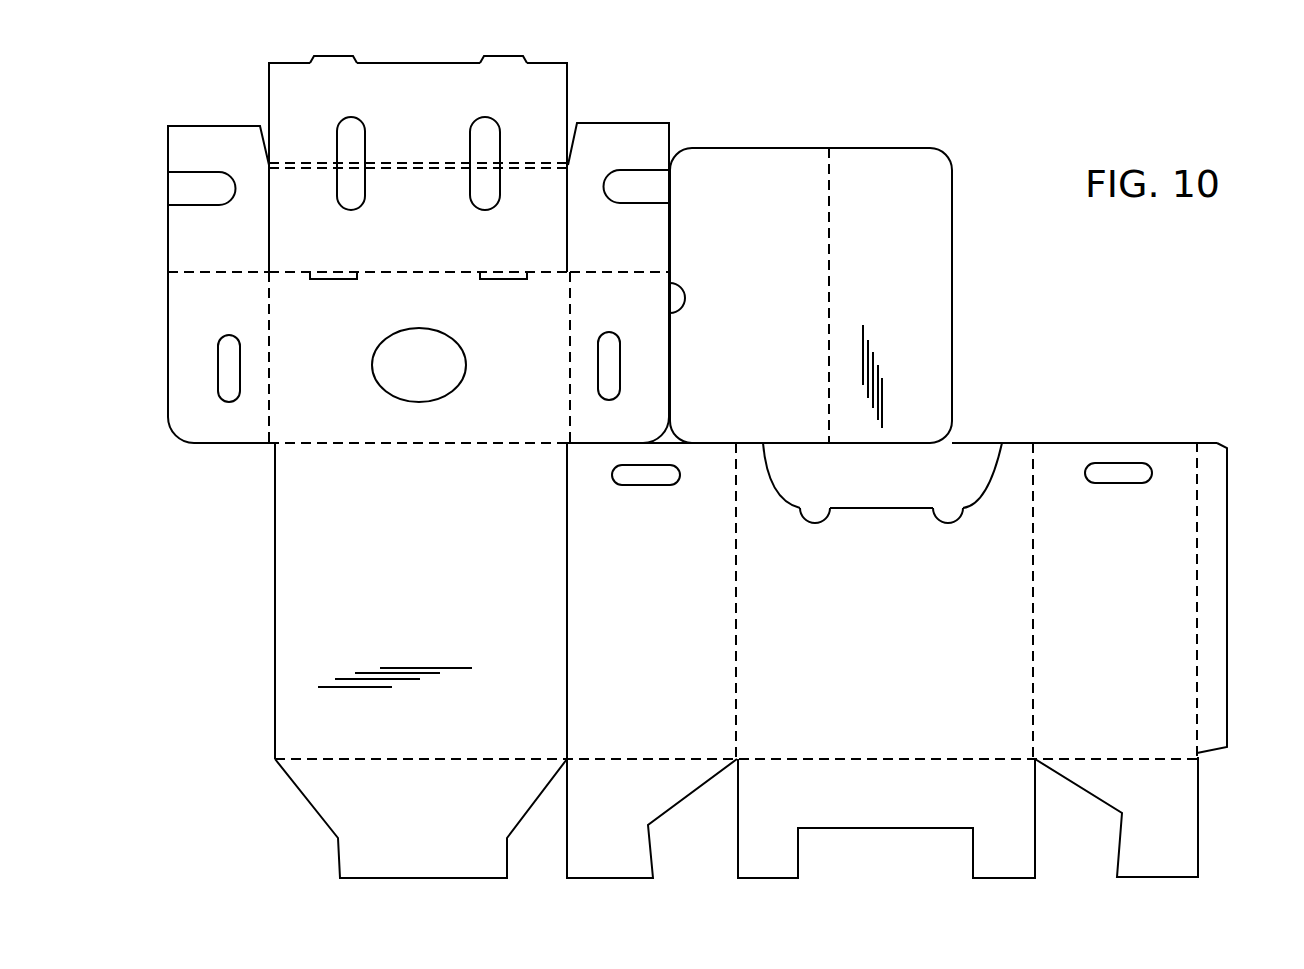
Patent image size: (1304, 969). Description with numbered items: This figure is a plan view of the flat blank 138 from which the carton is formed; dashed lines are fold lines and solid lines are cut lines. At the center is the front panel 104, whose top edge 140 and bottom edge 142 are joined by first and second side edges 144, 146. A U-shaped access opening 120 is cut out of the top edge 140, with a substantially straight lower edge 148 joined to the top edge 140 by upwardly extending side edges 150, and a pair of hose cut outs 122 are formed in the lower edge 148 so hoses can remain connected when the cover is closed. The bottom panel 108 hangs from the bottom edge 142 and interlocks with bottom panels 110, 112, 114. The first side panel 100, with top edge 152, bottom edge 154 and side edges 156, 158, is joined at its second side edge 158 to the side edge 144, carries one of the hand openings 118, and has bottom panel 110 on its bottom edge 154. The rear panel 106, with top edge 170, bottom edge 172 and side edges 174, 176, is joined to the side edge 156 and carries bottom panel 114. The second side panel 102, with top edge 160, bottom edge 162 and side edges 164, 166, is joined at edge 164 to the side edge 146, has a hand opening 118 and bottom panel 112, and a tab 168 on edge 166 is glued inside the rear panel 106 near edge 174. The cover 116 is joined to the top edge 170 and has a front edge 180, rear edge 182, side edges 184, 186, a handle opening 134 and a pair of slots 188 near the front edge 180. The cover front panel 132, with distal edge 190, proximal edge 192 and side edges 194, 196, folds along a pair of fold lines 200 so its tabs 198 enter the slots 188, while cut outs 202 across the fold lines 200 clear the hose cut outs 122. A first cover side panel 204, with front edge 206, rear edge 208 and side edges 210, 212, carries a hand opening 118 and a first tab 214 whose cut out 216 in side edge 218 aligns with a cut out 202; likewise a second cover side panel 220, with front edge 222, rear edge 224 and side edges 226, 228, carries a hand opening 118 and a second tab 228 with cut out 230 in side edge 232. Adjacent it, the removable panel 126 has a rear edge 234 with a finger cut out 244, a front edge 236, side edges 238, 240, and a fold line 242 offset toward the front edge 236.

The first side panel 100 is at (674, 648).
The second side panel 102 is at (1140, 590).
The front panel 104 is at (902, 632).
The rear panel 106 is at (440, 601).
The bottom panel 108 is at (904, 809).
The bottom panel 110 is at (636, 809).
The bottom panel 112 is at (1174, 809).
The bottom panel 114 is at (448, 817).
The cover 116 is at (334, 330).
The hand openings 118 is at (218, 377).
The access opening 120 is at (935, 470).
The hose cut outs 122 is at (815, 524).
The removable panel 126 is at (775, 262).
The cover front panel 132 is at (435, 148).
The handle opening 134 is at (463, 350).
The flat blank 138 is at (996, 272).
The top edge 140 is at (1009, 440).
The bottom edge 142 is at (946, 762).
The first side edge 144 is at (738, 649).
The second side edge 146 is at (1032, 653).
The lower edge 148 is at (880, 509).
The side edges 150 is at (767, 475).
The top edge 152 is at (670, 444).
The bottom edge 154 is at (652, 758).
The first side edge 156 is at (568, 621).
The second side edge 158 is at (734, 587).
The top edge 160 is at (1065, 443).
The bottom edge 162 is at (1134, 757).
The first side edge 164 is at (1036, 693).
The second side edge 166 is at (1197, 711).
The tab 168 is at (1228, 597).
The top edge 170 is at (407, 445).
The bottom edge 172 is at (445, 758).
The first side edge 174 is at (276, 556).
The second side edge 176 is at (567, 585).
The front edge 180 is at (437, 273).
The rear edge 182 is at (481, 441).
The first side edge 184 is at (271, 364).
The second side edge 186 is at (569, 362).
The slots 188 is at (331, 280).
The distal edge 190 is at (422, 64).
The proximal edge 192 is at (390, 271).
The first side edge 194 is at (270, 230).
The second side edge 196 is at (567, 233).
The tabs 198 is at (325, 62).
The fold lines 200 is at (535, 166).
The cut outs 202 is at (348, 118).
The first cover side panel 204 is at (220, 330).
The front edge 206 is at (238, 274).
The rear edge 208 is at (241, 440).
The first side edge 210 is at (173, 388).
The second side edge 212 is at (266, 341).
The first tab 214 is at (240, 260).
The cut out 216 is at (193, 165).
The side edge 218 is at (172, 228).
The second cover side panel 220 is at (617, 322).
The front edge 222 is at (603, 274).
The rear edge 224 is at (572, 422).
The first side edge 226 is at (570, 394).
The second tab 228 is at (637, 260).
The cut out 230 is at (600, 165).
The side edge 232 is at (670, 245).
The rear edge 234 is at (671, 401).
The front edge 236 is at (952, 305).
The side edge 238 is at (747, 152).
The side edge 240 is at (797, 442).
The fold line 242 is at (830, 272).
The finger cut out 244 is at (686, 297).